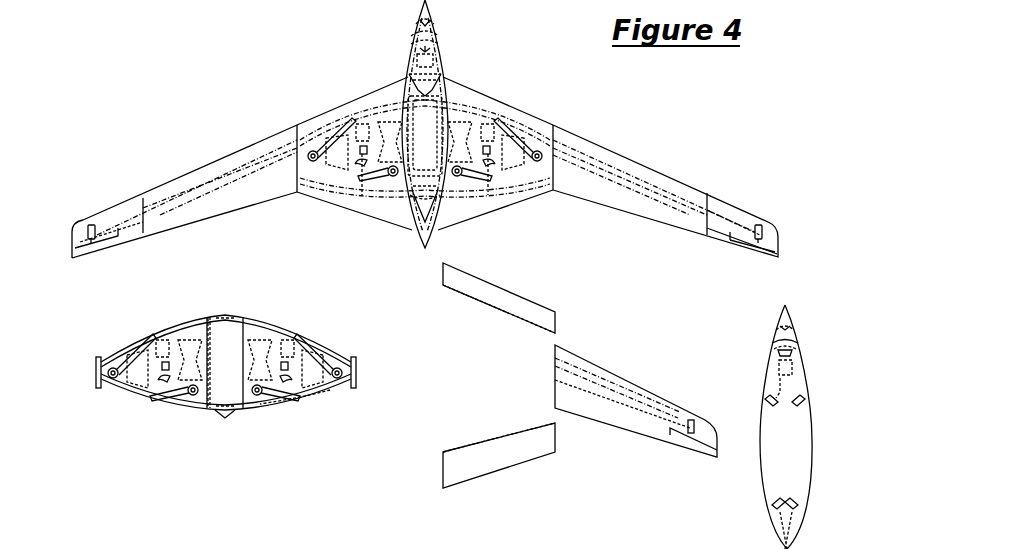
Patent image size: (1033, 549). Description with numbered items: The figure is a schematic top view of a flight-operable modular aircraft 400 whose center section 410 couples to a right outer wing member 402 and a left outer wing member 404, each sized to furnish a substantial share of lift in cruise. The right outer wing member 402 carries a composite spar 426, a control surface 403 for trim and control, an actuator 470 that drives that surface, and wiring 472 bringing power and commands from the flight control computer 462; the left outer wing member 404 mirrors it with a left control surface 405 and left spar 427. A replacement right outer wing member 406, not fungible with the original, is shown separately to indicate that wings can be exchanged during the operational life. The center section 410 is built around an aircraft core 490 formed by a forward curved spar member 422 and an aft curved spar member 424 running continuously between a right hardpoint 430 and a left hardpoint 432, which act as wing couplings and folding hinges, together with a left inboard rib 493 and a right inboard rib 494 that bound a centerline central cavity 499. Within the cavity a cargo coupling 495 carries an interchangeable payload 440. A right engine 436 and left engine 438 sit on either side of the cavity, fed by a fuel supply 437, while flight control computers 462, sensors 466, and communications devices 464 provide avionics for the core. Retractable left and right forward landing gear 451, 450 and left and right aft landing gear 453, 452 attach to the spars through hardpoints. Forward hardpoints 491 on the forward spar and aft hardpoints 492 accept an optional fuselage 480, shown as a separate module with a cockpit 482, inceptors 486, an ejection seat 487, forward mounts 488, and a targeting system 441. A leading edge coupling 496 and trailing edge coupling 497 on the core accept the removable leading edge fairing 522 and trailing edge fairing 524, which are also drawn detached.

The modular aircraft 400 is at (158, 106).
The right outer wing member 402 is at (590, 141).
The control surface 403 is at (750, 242).
The left outer wing member 404 is at (186, 176).
The left control surface 405 is at (100, 250).
The replacement right outer wing member 406 is at (600, 366).
The aircraft center section 410 is at (345, 70).
The forward curved spar member 422 is at (470, 106).
The aft curved spar member 424 is at (455, 208).
The spar 426 is at (610, 165).
The left spar 427 is at (270, 150).
The right hardpoint 430 is at (358, 370).
The left hardpoint 432 is at (100, 365).
The right engine 436 is at (455, 116).
The fuel supply 437 is at (337, 176).
The left engine 438 is at (383, 110).
The interchangeable payload 440 is at (430, 92).
The targeting system 441 is at (424, 24).
The right forward landing gear 450 is at (530, 150).
The left forward landing gear 451 is at (310, 150).
The right aft landing gear 452 is at (433, 230).
The left aft landing gear 453 is at (395, 200).
The flight control computer 462 is at (340, 115).
The communications devices 464 is at (488, 170).
The sensors 466 is at (378, 196).
The actuator 470 is at (785, 196).
The wiring 472 is at (718, 218).
The fuselage 480 is at (413, 236).
The cockpit 482 is at (766, 340).
The inceptors 486 is at (798, 372).
The ejection seat 487 is at (780, 370).
The forward mounts 488 is at (775, 398).
The aircraft core 490 is at (156, 424).
The forward hardpoints 491 is at (218, 318).
The aft hardpoints 492 is at (230, 408).
The left inboard rib 493 is at (196, 320).
The right inboard rib 494 is at (247, 320).
The cargo coupling 495 is at (215, 395).
The leading edge coupling 496 is at (300, 332).
The trailing edge coupling 497 is at (295, 404).
The central cavity 499 is at (208, 412).
The leading edge fairing 522 is at (512, 310).
The trailing edge fairing 524 is at (512, 445).